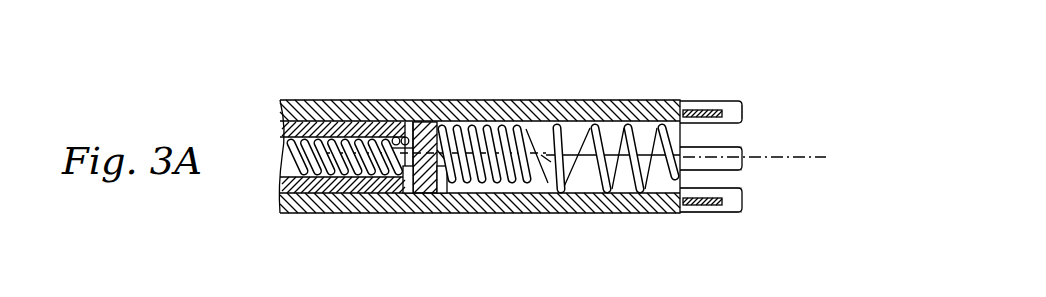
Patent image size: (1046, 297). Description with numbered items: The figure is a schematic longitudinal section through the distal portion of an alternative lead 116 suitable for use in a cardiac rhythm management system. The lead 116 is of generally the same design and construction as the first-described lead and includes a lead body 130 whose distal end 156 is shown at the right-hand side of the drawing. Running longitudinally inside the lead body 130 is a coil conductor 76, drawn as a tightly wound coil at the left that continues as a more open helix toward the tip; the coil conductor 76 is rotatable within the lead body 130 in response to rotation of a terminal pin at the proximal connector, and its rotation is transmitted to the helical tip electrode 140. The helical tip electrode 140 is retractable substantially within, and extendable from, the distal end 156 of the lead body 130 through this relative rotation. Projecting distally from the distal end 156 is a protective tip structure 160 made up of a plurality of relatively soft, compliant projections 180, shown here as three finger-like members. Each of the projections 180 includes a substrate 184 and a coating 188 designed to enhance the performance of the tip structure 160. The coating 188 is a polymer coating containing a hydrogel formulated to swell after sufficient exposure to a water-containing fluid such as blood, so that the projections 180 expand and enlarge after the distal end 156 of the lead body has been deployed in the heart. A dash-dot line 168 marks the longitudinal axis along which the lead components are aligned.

The lead 116 is at (362, 80).
The distal end 156 is at (508, 97).
The lead body 130 is at (395, 214).
The coil conductor 76 is at (318, 168).
The helical tip electrode 140 is at (607, 181).
The protective tip structure 160 is at (705, 97).
The projections 180 is at (687, 98).
The coating 188 is at (742, 109).
The substrate 184 is at (718, 118).
The longitudinal axis 168 is at (803, 153).